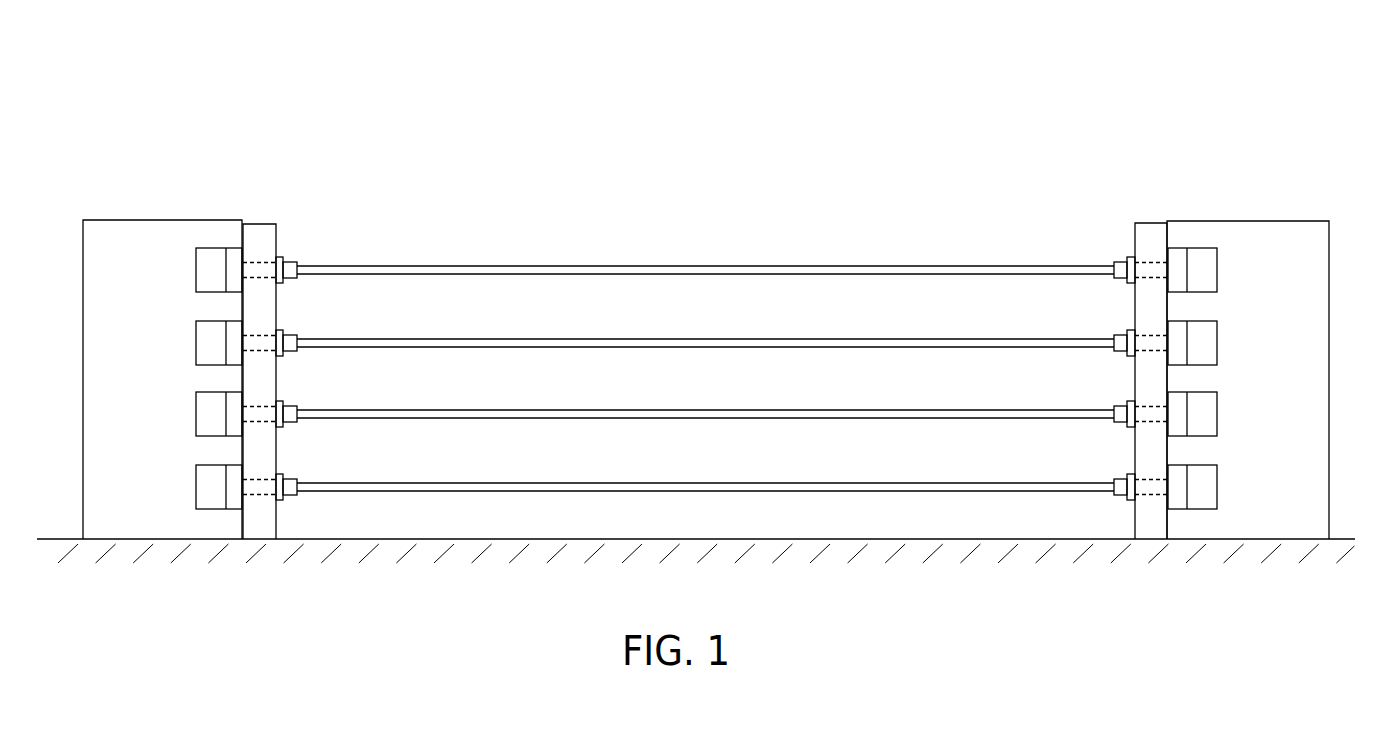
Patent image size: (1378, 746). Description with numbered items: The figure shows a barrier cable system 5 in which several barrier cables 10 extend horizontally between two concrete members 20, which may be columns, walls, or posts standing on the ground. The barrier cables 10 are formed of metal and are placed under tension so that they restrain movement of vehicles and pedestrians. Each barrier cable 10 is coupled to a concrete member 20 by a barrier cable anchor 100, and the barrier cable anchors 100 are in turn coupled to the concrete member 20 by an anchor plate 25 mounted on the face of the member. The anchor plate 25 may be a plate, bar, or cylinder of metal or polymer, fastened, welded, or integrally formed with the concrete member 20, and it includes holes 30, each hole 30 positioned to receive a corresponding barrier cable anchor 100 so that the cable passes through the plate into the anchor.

The barrier cable system 5 is at (386, 93).
The barrier cable 10 is at (707, 263).
The concrete member 20 is at (127, 220).
The anchor plate 25 is at (252, 222).
The hole 30 is at (257, 258).
The barrier cable anchor 100 is at (196, 258).